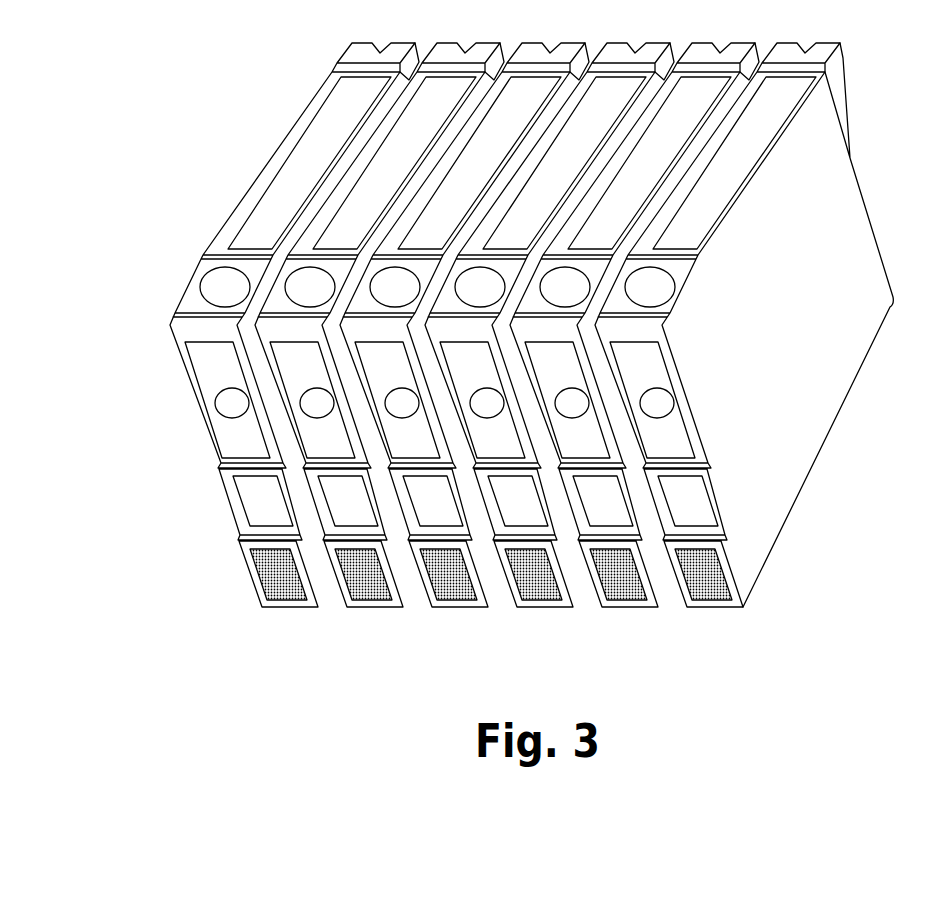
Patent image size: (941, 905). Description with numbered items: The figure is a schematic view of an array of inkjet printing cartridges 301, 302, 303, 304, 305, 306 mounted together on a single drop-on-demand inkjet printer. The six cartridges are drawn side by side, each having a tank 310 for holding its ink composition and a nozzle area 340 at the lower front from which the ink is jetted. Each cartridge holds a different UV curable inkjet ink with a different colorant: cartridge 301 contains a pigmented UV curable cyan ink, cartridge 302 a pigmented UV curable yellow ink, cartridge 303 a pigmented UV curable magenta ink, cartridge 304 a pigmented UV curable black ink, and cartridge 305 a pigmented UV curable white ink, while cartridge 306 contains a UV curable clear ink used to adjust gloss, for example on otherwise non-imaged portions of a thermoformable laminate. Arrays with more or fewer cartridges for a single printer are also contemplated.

The cartridge 301 is at (208, 279).
The cartridge 302 is at (295, 278).
The cartridge 303 is at (378, 279).
The cartridge 304 is at (655, 275).
The cartridge 305 is at (570, 277).
The cartridge 306 is at (486, 273).
The tank 310 is at (812, 380).
The nozzle area 340 is at (712, 596).